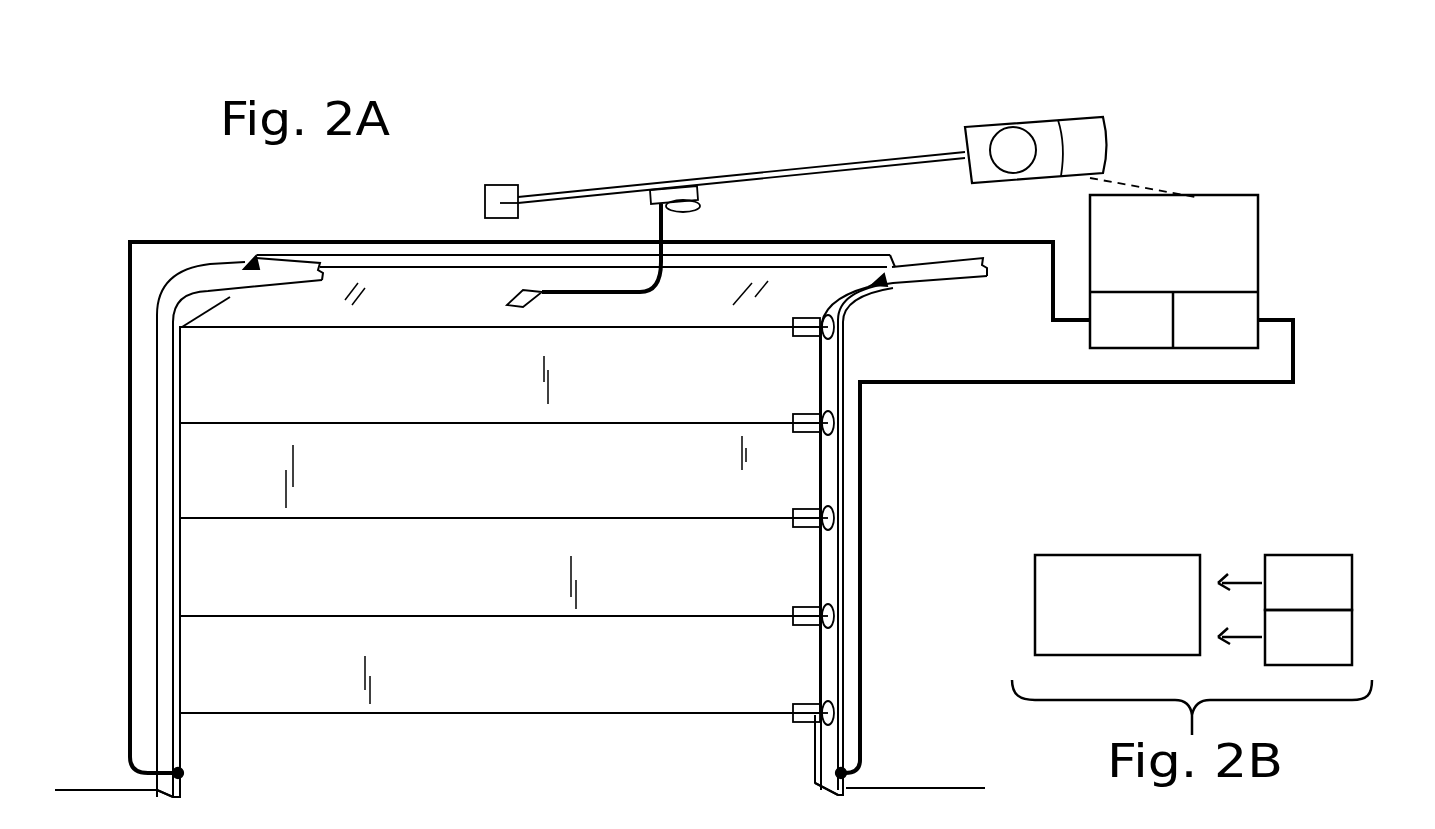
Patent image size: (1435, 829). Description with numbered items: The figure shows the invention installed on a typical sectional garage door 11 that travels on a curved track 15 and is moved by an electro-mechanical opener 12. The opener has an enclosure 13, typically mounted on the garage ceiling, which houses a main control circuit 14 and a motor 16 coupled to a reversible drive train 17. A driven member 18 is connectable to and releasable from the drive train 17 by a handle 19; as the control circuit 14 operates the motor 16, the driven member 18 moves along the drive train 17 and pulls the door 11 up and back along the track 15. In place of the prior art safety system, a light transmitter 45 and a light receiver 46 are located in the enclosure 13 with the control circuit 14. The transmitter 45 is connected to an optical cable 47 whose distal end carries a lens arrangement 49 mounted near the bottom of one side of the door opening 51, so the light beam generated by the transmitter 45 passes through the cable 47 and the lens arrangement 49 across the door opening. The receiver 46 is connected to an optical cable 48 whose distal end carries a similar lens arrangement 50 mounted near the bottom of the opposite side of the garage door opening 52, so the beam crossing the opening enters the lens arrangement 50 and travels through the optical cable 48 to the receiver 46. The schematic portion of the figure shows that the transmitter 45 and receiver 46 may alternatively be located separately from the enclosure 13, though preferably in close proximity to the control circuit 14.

In FIG. 2A, the sectional garage door 11 is at (517, 481).
In FIG. 2A, the electro-mechanical opener 12 is at (1080, 132).
In FIG. 2A, the enclosure 13 is at (1095, 145).
In FIG. 2A, the main control circuit 14 is at (1179, 293).
In FIG. 2B, the main control circuit 14 is at (1137, 556).
In FIG. 2A, the curved track 15 is at (258, 285).
In FIG. 2A, the motor 16 is at (1008, 138).
In FIG. 2A, the reversible drive train 17 is at (747, 177).
In FIG. 2A, the driven member 18 is at (670, 190).
In FIG. 2A, the handle 19 is at (690, 210).
In FIG. 2A, the light transmitter 45 is at (1125, 348).
In FIG. 2B, the light transmitter 45 is at (1352, 588).
In FIG. 2A, the light receiver 46 is at (1212, 348).
In FIG. 2B, the light receiver 46 is at (1352, 648).
In FIG. 2A, the optical cable 47 is at (297, 240).
In FIG. 2A, the optical cable 48 is at (1025, 384).
In FIG. 2A, the lens arrangement 49 is at (182, 775).
In FIG. 2A, the lens arrangement 50 is at (820, 778).
In FIG. 2A, the door opening side 51 is at (208, 760).
In FIG. 2A, the garage door opening side 52 is at (790, 760).